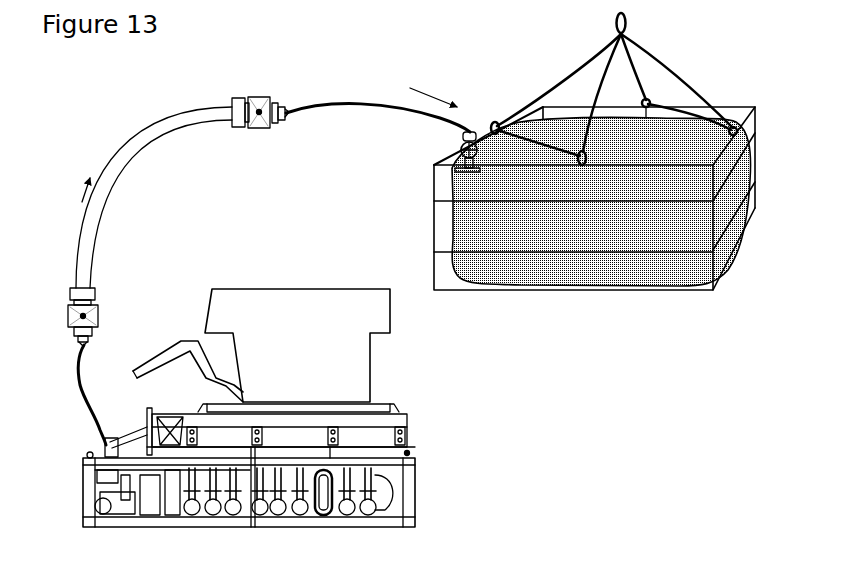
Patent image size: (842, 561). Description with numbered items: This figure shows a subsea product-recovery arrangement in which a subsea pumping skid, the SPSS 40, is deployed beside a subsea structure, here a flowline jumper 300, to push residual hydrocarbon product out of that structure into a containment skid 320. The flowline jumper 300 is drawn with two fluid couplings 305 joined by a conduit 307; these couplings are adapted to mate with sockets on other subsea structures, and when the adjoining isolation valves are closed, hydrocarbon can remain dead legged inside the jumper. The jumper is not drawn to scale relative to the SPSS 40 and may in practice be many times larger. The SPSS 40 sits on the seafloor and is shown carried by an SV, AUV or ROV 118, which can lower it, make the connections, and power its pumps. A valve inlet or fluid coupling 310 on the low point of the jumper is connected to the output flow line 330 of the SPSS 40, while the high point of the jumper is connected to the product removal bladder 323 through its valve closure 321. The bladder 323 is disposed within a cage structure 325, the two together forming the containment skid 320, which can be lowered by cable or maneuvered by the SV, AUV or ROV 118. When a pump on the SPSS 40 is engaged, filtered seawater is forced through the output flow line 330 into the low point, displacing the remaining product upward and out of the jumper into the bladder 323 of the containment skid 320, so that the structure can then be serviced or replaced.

The flowline jumper 300 is at (95, 138).
The fluid coupling 305 is at (262, 98).
The conduit 307 is at (130, 153).
The valve inlet or fluid coupling 310 is at (289, 110).
The output flow line 330 is at (353, 104).
The valve closure 321 is at (452, 170).
The product removal bladder 323 is at (470, 228).
The cage structure 325 is at (718, 280).
The containment skid 320 is at (681, 322).
The SV, AUV or ROV 118 is at (353, 353).
The SPSS 40 is at (430, 490).